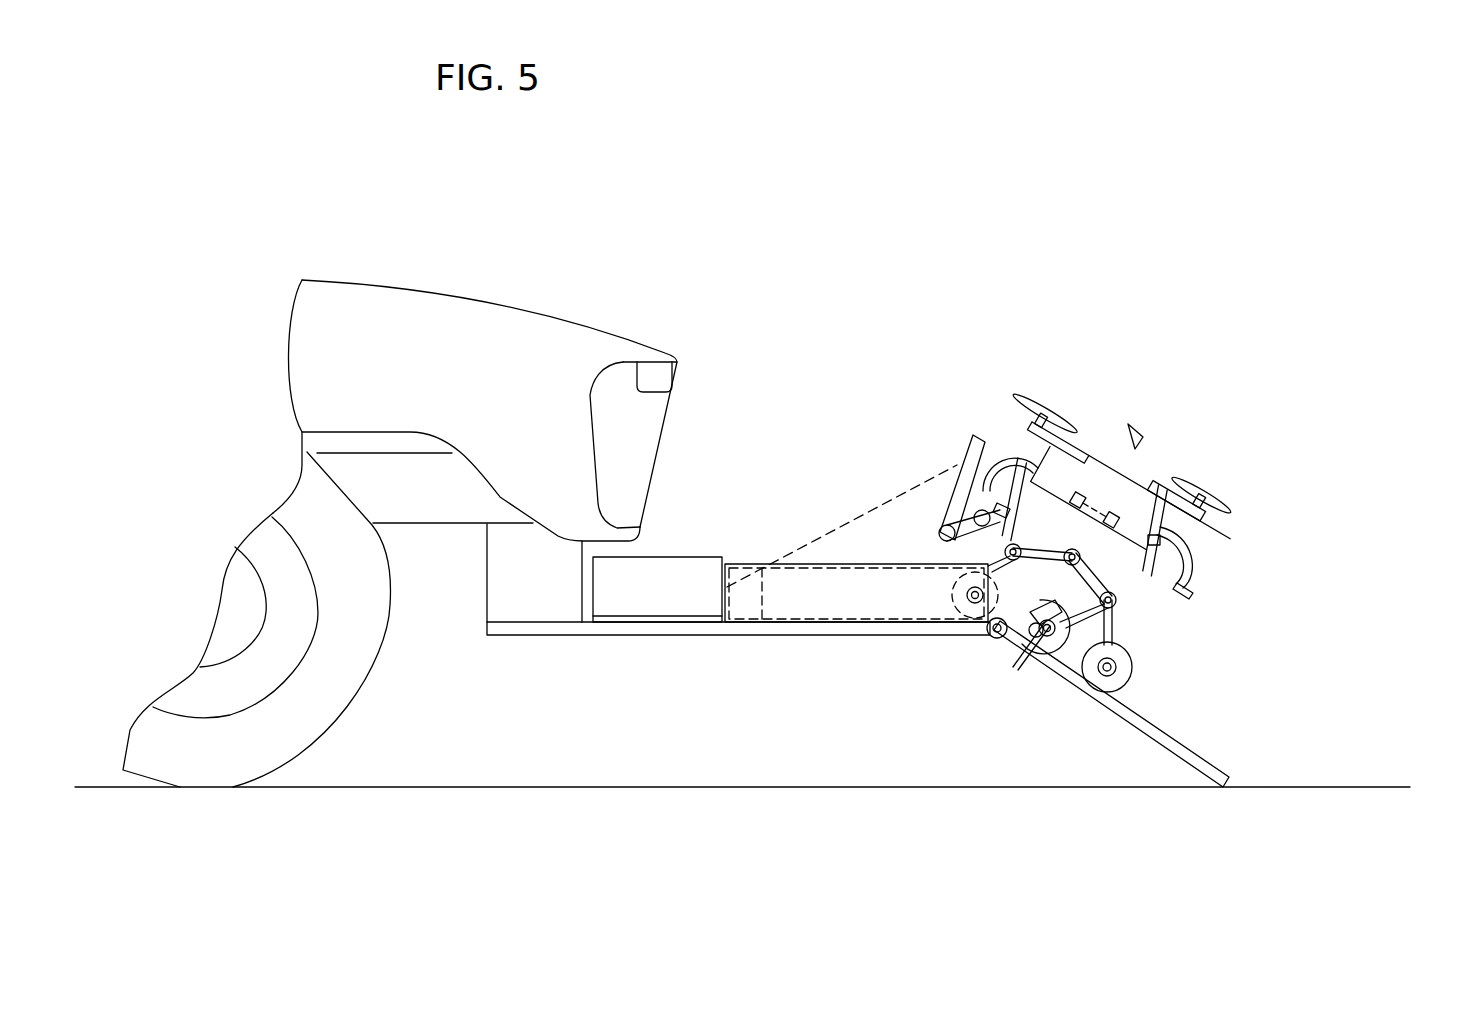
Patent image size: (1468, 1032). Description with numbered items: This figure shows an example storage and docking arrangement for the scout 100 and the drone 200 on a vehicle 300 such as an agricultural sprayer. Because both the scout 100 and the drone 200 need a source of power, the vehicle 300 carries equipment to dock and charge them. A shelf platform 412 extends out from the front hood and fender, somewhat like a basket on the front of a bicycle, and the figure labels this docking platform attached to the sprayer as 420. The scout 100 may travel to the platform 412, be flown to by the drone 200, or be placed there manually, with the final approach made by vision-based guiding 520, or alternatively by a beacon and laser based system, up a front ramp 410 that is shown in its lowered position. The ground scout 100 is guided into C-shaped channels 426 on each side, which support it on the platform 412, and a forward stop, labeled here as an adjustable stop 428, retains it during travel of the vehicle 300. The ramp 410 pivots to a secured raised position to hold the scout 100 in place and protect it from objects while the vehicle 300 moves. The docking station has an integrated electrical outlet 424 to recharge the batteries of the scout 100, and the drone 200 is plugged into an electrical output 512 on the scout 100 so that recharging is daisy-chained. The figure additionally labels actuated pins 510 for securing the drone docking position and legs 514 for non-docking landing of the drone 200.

The scout 100 is at (1120, 572).
The drone 200 is at (1032, 403).
The vehicle 300 is at (386, 267).
The ramp 410 is at (1150, 723).
The platform 412 is at (972, 634).
The docking platform attached to sprayer 420 is at (507, 597).
The electrical outlet 424 is at (605, 589).
The C-shaped channels 426 is at (933, 672).
The adjustable stop 428 is at (765, 603).
The actuated pins for securing UAV docking position 510 is at (1045, 478).
The electrical output 512 is at (1120, 603).
The legs for non-docking landing 514 is at (1190, 568).
The vision-based (and/or beacon, laser alignment) guidance to dock 520 is at (850, 517).